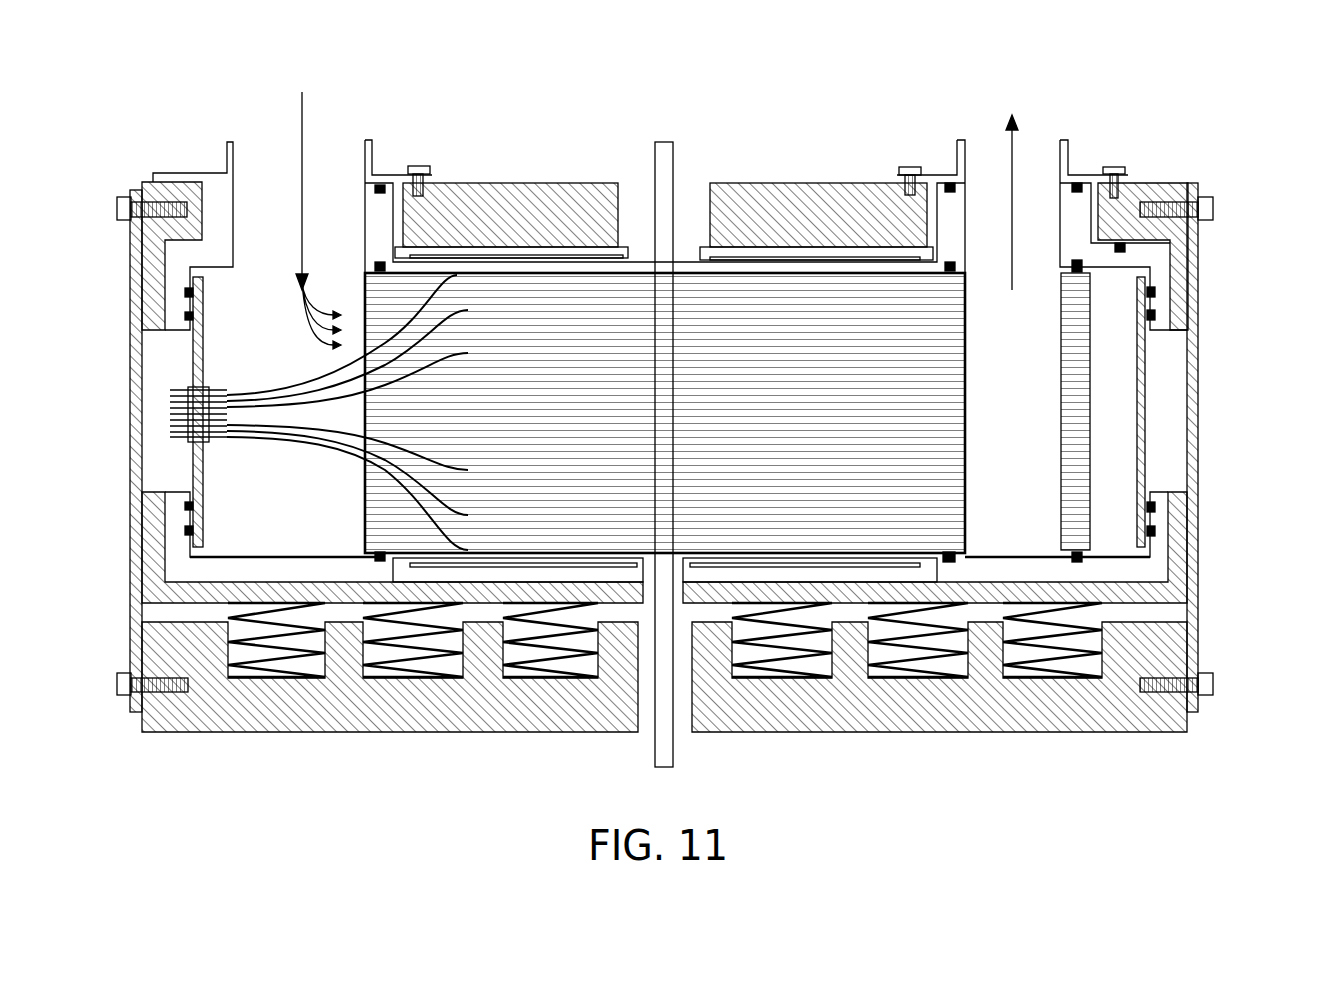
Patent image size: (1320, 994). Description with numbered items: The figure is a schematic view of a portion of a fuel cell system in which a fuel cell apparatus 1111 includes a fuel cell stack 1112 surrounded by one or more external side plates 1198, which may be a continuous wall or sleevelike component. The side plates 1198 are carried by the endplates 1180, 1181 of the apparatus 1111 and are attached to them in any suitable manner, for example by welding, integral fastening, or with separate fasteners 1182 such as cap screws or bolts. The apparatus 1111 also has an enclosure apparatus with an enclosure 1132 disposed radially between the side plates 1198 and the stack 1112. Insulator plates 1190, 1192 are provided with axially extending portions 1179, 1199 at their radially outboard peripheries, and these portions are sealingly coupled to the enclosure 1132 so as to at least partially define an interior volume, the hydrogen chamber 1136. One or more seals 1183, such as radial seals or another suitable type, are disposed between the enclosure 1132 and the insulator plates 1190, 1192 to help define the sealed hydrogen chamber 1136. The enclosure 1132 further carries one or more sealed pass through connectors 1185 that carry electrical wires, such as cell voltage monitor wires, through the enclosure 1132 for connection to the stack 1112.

The fuel cell apparatus 1111 is at (243, 108).
The fuel cell stack 1112 is at (308, 457).
The enclosure 1132 is at (195, 458).
The hydrogen chamber 1136 is at (283, 522).
The axially extending portion 1179 is at (170, 258).
The endplate 1180 is at (157, 193).
The endplate 1181 is at (468, 700).
The fastener 1182 is at (130, 213).
The seal 1183 is at (185, 292).
The sealed pass through connector 1185 is at (188, 440).
The insulator plate 1190 is at (338, 570).
The insulator plate 1192 is at (211, 208).
The external side plate 1198 is at (185, 317).
The axially extending portion 1199 is at (178, 550).